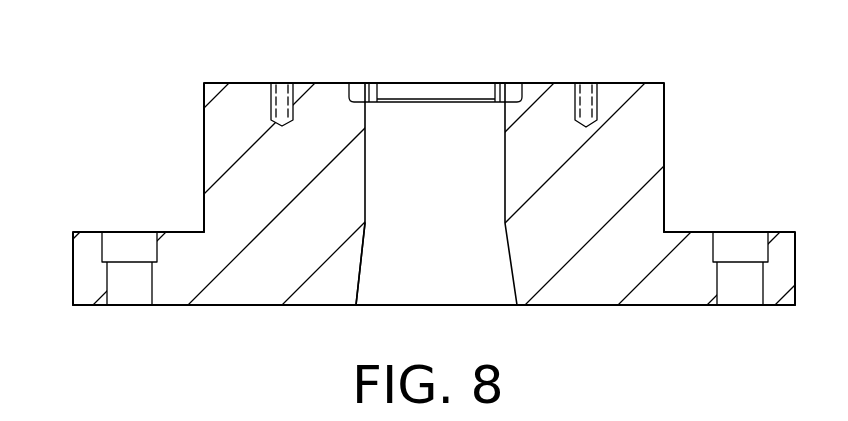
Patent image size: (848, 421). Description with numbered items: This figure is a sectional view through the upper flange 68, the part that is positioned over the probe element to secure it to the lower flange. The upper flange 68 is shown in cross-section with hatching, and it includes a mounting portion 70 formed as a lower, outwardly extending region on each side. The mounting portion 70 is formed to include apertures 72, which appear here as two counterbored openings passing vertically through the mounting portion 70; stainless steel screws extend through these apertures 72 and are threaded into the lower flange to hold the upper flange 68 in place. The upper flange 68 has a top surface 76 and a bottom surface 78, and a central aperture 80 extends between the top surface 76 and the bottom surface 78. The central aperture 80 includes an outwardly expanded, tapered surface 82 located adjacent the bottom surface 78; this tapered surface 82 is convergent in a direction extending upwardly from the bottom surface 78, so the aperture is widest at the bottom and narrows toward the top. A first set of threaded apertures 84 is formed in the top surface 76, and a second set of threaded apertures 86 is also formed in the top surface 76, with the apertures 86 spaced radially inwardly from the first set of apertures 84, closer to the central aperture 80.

The upper flange 68 is at (724, 128).
The mounting portion 70 is at (90, 262).
The apertures 72 is at (110, 277).
The top surface 76 is at (225, 83).
The bottom surface 78 is at (257, 306).
The central aperture 80 is at (367, 157).
The tapered surface 82 is at (359, 270).
The first set of threaded apertures 84 is at (278, 83).
The second set of threaded apertures 86 is at (360, 83).